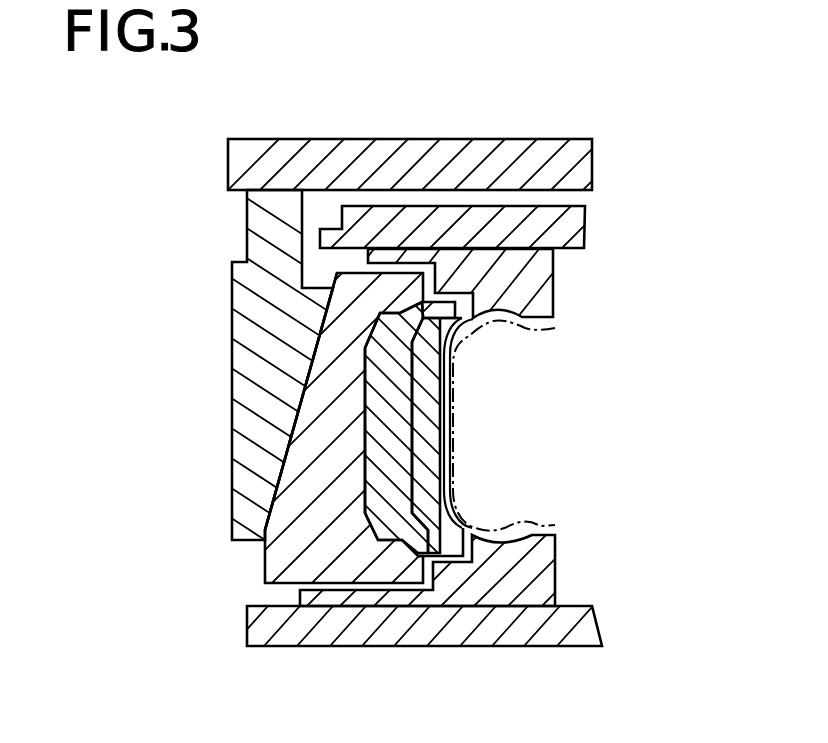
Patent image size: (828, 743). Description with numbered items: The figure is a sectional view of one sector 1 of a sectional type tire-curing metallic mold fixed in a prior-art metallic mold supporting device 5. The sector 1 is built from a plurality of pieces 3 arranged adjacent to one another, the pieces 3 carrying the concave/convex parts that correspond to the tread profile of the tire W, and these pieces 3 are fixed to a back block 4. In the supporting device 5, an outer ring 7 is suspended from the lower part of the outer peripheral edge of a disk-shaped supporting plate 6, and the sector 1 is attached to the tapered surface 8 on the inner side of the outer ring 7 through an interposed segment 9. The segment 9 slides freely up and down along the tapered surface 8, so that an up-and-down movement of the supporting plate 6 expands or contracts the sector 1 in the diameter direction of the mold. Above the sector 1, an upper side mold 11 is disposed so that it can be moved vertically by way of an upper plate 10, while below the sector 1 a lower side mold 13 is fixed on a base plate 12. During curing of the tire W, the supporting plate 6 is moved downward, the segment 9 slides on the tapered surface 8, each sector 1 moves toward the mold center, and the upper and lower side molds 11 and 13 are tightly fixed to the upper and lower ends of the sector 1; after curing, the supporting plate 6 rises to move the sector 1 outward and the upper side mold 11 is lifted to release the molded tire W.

The sector 1 is at (356, 471).
The pieces 3 is at (427, 455).
The back block 4 is at (445, 415).
The metallic mold supporting device 5 is at (538, 134).
The supporting plate 6 is at (468, 170).
The outer ring 7 is at (260, 358).
The tapered surface 8 is at (293, 418).
The segment 9 is at (298, 543).
The upper plate 10 is at (568, 227).
The upper side mold 11 is at (547, 282).
The base plate 12 is at (417, 630).
The lower side mold 13 is at (540, 575).
The tire W is at (557, 508).